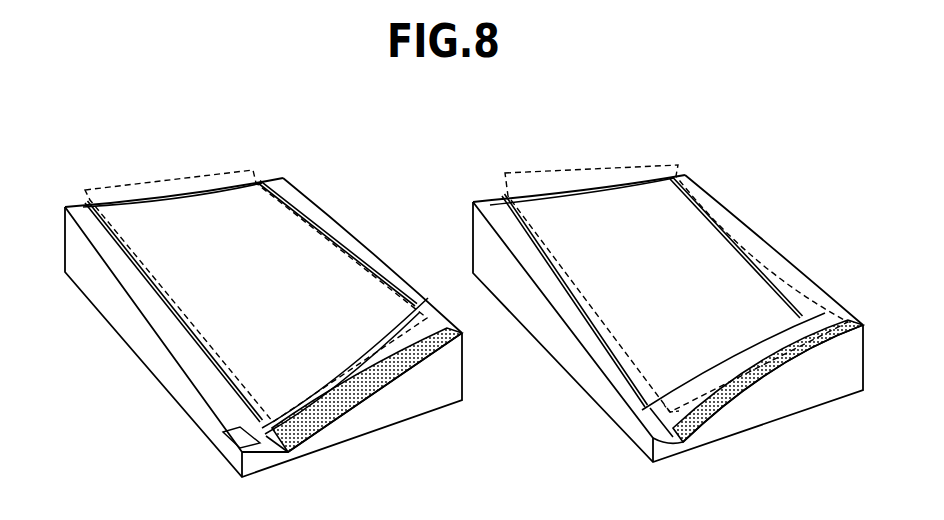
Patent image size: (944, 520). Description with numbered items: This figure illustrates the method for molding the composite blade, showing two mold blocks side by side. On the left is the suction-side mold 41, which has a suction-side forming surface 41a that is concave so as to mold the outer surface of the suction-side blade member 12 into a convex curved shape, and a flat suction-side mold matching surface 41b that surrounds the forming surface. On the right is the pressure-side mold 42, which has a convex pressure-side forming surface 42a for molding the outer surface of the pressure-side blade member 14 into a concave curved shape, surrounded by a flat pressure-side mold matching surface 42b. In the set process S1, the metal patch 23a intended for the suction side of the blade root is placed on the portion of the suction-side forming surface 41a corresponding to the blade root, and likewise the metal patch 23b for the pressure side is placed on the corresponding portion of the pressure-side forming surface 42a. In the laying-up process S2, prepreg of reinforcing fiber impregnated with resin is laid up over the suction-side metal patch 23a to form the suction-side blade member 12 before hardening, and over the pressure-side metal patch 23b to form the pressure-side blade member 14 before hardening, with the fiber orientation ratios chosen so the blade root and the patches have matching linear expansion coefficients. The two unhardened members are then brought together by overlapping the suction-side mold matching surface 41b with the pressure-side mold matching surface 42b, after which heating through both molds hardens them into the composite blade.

The suction-side blade member 12 is at (117, 182).
The pressure-side blade member 14 is at (527, 177).
The suction-side mold 41 is at (230, 284).
The suction-side forming surface 41a is at (170, 210).
The suction-side mold matching surface 41b is at (80, 212).
The pressure-side mold 42 is at (632, 272).
The pressure-side forming surface 42a is at (578, 203).
The pressure-side mold matching surface 42b is at (492, 207).
The suction-side metal patch 23a is at (343, 414).
The pressure-side metal patch 23b is at (716, 410).
The set process S1 is at (423, 431).
The laying-up process S2 is at (323, 243).